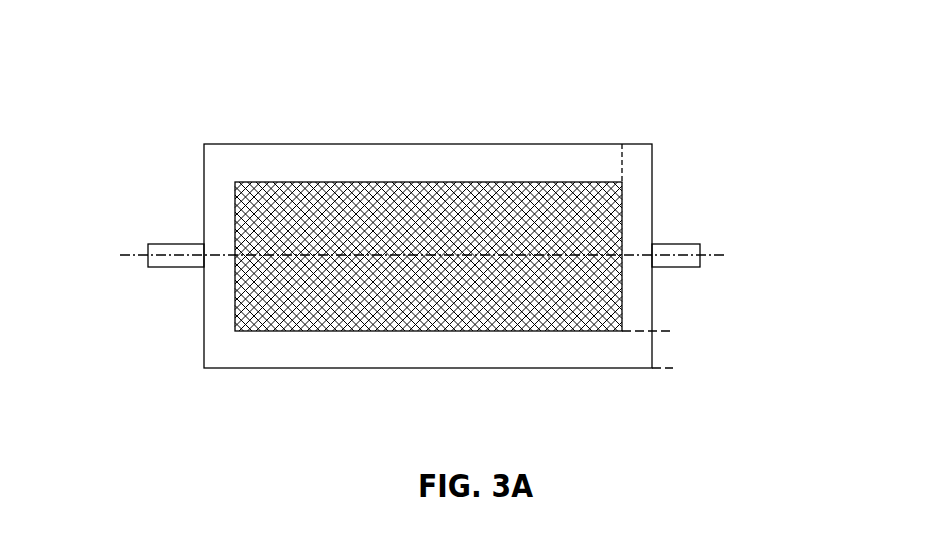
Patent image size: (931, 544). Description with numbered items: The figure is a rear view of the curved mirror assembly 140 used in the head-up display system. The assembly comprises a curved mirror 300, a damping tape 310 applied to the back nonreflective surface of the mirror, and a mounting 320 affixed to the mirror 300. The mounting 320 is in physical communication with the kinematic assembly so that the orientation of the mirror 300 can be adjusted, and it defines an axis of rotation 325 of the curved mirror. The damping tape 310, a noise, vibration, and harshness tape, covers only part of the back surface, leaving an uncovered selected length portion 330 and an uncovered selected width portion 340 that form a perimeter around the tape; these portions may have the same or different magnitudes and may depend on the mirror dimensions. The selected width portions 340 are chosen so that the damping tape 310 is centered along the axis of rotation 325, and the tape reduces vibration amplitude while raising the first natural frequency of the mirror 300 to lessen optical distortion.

The curved mirror assembly 140 is at (669, 47).
The curved mirror 300 is at (203, 330).
The damping tape 310 is at (495, 298).
The mounting 320 is at (148, 263).
The axis of rotation 325 is at (549, 257).
The selected length portion 330 is at (670, 331).
The selected width portion 340 is at (652, 144).